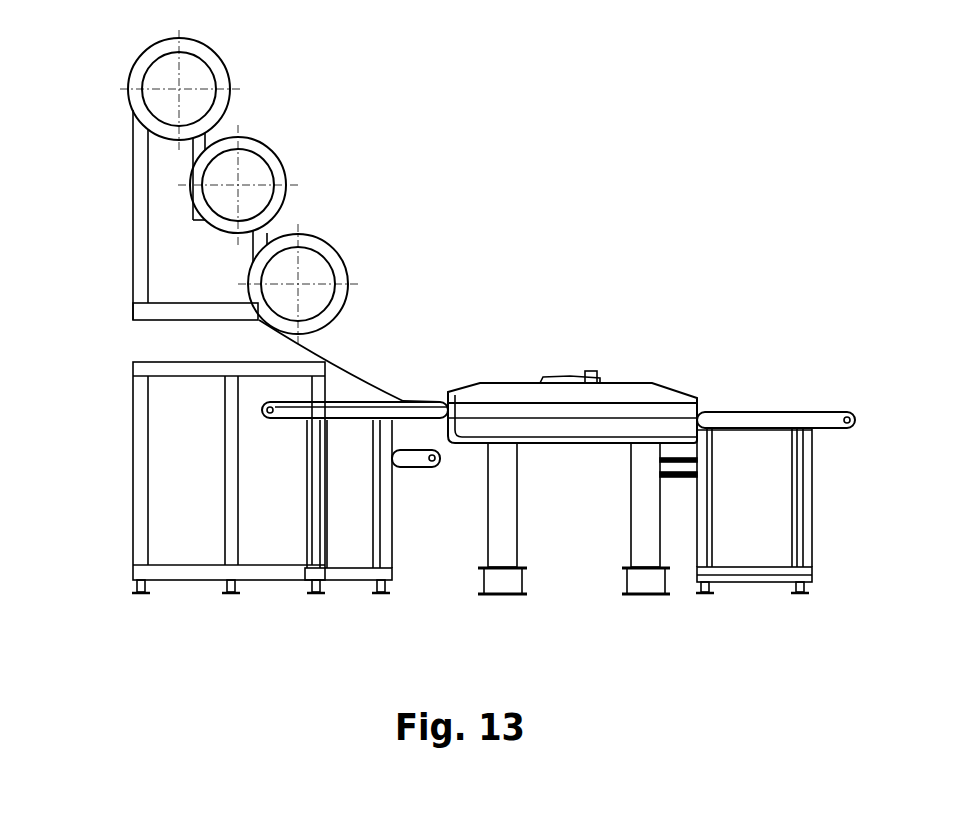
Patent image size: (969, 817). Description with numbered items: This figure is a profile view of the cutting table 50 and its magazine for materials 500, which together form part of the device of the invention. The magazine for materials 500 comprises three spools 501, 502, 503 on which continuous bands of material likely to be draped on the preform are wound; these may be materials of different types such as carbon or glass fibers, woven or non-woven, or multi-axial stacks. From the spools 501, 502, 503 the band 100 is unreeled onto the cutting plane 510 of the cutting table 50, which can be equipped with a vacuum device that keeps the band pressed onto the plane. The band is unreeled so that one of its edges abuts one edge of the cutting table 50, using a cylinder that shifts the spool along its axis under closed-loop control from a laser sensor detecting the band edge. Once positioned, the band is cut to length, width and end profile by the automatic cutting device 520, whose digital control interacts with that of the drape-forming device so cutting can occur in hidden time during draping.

The magazine for materials 500 is at (108, 148).
The spool 503 is at (209, 62).
The spool 502 is at (268, 157).
The spool 501 is at (337, 268).
The web of material 100 is at (354, 377).
The cutting table 50 is at (738, 366).
The automatic cutting device 520 is at (593, 371).
The cutting plane 510 is at (835, 400).